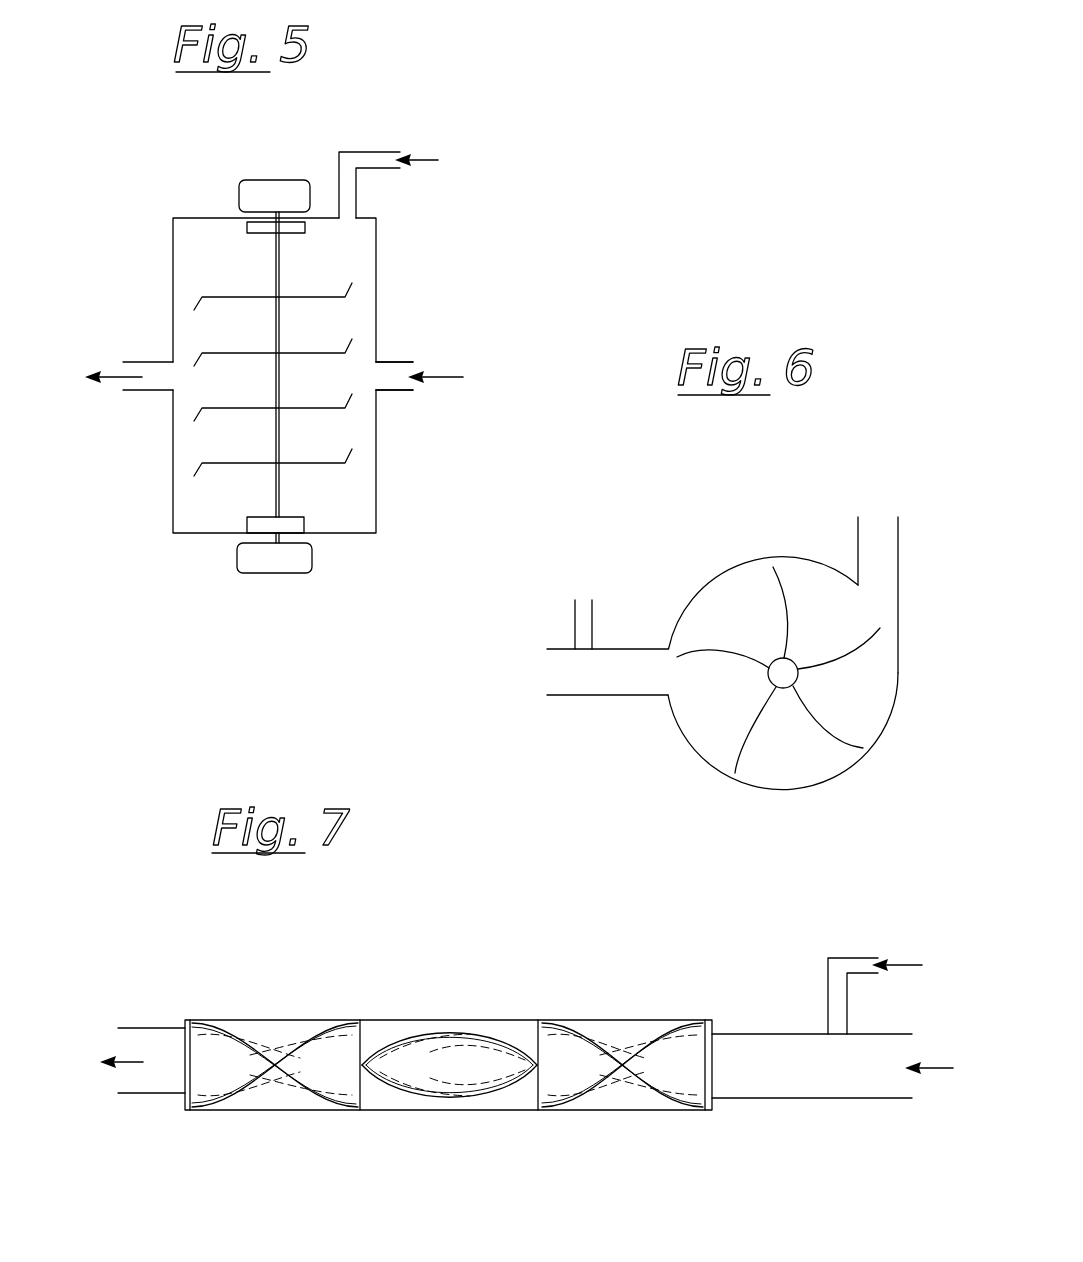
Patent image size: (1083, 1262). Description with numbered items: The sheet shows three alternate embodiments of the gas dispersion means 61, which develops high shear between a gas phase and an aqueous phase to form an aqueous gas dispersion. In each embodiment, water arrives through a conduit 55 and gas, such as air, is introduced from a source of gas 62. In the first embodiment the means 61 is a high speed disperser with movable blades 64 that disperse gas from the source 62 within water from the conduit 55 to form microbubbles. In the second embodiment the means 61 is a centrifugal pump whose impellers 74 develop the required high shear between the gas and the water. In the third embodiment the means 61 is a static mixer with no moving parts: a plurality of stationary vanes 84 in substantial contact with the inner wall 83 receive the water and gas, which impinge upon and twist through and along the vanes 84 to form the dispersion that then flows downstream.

In FIG. 5, the conduit 55 is at (395, 393).
In FIG. 6, the conduit 55 is at (598, 697).
In FIG. 7, the conduit 55 is at (868, 1100).
In FIG. 5, the gas dispersion means 61 is at (379, 486).
In FIG. 6, the gas dispersion means 61 is at (882, 736).
In FIG. 7, the gas dispersion means 61 is at (653, 1115).
In FIG. 5, the source of gas 62 is at (373, 150).
In FIG. 6, the source of gas 62 is at (595, 622).
In FIG. 7, the source of gas 62 is at (850, 955).
In FIG. 5, the movable blades 64 is at (313, 295).
In FIG. 6, the impellers 74 is at (757, 713).
In FIG. 7, the inner wall 83 is at (490, 1108).
In FIG. 7, the vanes 84 is at (643, 1038).